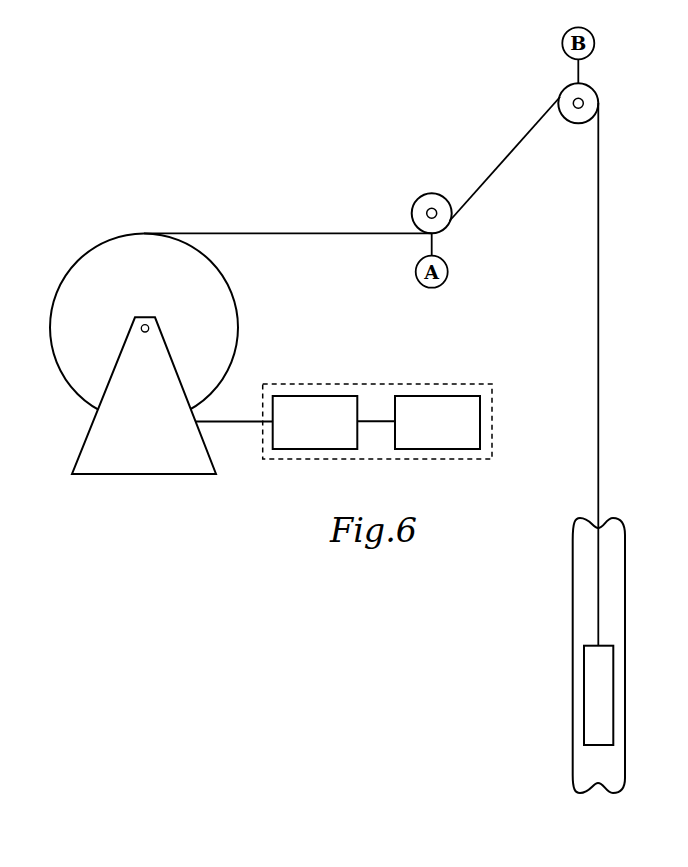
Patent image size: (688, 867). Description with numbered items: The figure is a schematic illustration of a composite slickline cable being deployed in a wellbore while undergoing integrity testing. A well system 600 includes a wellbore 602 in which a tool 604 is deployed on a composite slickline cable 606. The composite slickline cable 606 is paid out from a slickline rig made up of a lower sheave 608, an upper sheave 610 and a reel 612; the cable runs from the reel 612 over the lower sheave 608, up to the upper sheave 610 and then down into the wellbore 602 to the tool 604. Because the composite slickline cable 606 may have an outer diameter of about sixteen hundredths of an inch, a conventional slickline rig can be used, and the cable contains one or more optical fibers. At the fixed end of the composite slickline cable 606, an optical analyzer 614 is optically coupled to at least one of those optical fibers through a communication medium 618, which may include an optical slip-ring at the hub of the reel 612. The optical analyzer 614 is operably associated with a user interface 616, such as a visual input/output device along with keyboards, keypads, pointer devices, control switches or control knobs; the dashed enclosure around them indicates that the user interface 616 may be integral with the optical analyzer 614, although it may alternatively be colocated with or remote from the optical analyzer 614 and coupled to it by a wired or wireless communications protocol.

The well system 600 is at (295, 171).
The wellbore 602 is at (572, 592).
The tool 604 is at (588, 696).
The composite slickline cable 606 is at (598, 334).
The lower sheave 608 is at (432, 192).
The upper sheave 610 is at (595, 100).
The reel 612 is at (235, 304).
The optical analyzer 614 is at (318, 395).
The user interface 616 is at (442, 395).
The communication medium 618 is at (241, 424).